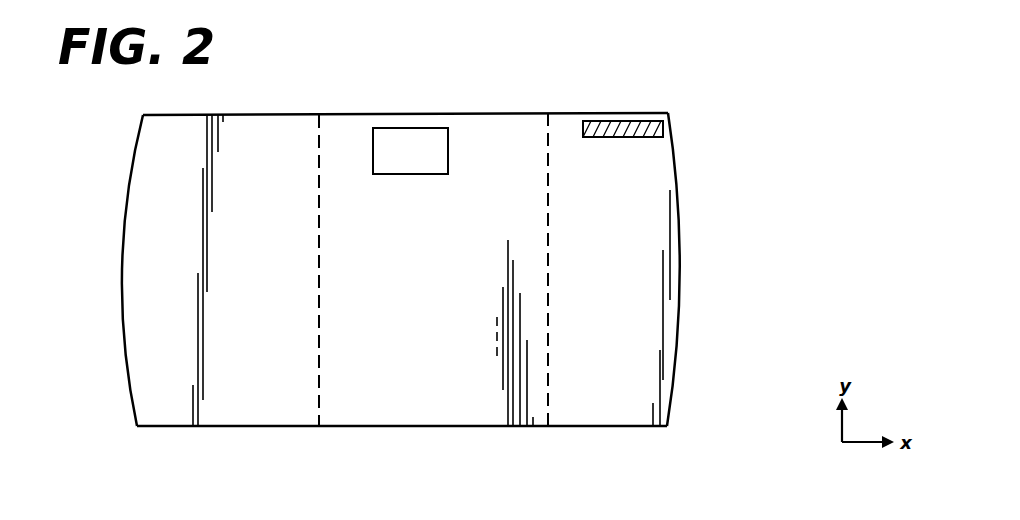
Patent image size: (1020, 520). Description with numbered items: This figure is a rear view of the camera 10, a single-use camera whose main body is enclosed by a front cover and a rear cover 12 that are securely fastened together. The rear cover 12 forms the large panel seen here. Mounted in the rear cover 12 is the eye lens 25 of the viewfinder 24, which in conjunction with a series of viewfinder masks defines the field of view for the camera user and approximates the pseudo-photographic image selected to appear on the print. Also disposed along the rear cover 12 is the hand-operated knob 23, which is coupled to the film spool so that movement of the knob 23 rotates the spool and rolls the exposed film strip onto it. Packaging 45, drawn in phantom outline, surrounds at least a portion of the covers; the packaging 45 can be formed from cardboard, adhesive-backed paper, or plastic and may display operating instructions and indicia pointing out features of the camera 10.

The camera 10 is at (687, 117).
The rear cover 12 is at (652, 279).
The hand-operated knob 23 is at (630, 137).
The viewfinder 24 is at (367, 155).
The eye lens 25 is at (447, 158).
The packaging 45 is at (318, 391).